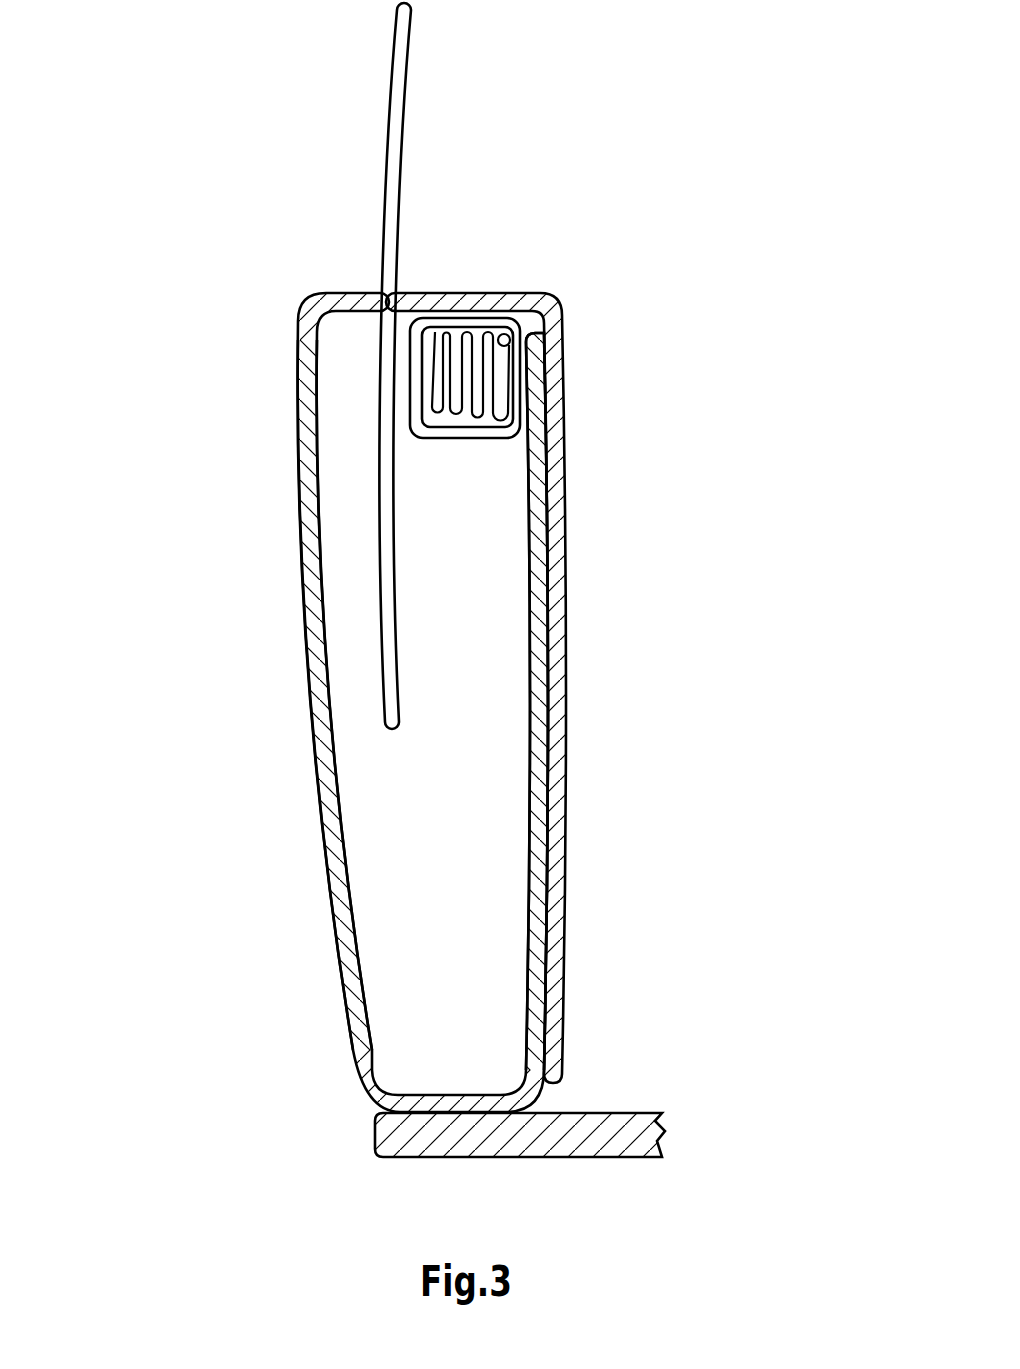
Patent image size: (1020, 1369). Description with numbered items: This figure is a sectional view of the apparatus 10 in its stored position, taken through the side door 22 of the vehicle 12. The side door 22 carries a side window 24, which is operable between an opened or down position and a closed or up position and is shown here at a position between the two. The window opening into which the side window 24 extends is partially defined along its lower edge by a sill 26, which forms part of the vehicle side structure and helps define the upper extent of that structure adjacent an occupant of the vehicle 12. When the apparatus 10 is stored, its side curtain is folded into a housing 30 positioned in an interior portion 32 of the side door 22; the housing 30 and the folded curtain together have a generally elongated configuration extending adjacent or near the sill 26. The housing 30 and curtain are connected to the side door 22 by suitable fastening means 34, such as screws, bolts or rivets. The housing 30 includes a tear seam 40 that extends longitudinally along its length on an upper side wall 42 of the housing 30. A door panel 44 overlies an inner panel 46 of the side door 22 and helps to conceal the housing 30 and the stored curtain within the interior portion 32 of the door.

The apparatus 10 is at (427, 557).
The vehicle 12 is at (411, 702).
The side door 22 is at (232, 718).
The side window 24 is at (396, 87).
The sill 26 is at (358, 290).
The housing 30 is at (519, 335).
The interior portion 32 is at (438, 664).
The fastening means 34 is at (508, 330).
The tear seam 40 is at (437, 323).
The upper side wall 42 is at (455, 322).
The door panel 44 is at (558, 897).
The inner panel 46 is at (540, 611).